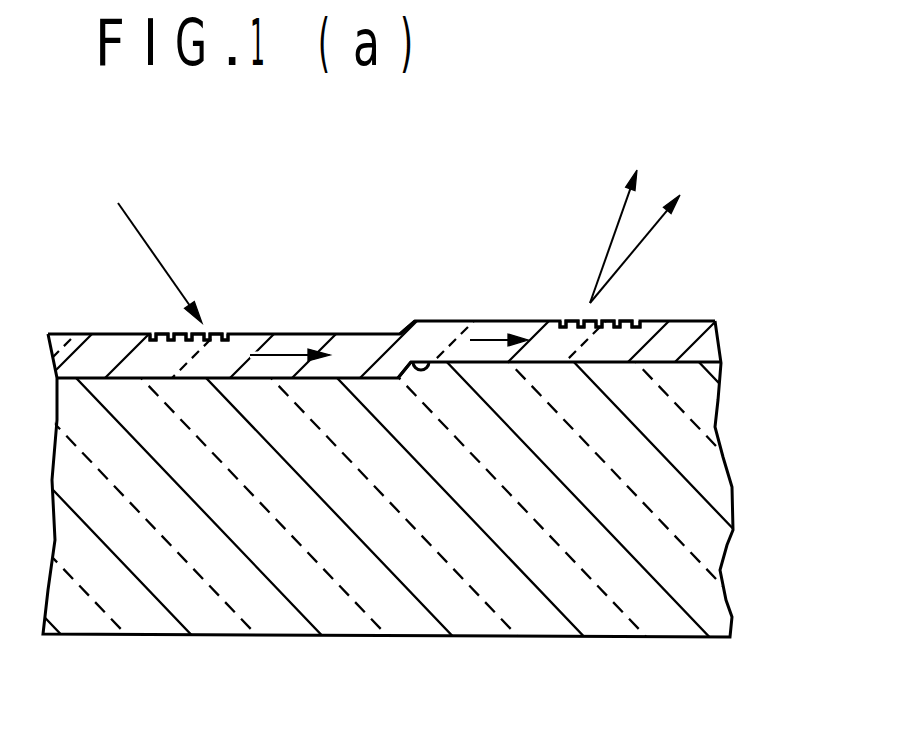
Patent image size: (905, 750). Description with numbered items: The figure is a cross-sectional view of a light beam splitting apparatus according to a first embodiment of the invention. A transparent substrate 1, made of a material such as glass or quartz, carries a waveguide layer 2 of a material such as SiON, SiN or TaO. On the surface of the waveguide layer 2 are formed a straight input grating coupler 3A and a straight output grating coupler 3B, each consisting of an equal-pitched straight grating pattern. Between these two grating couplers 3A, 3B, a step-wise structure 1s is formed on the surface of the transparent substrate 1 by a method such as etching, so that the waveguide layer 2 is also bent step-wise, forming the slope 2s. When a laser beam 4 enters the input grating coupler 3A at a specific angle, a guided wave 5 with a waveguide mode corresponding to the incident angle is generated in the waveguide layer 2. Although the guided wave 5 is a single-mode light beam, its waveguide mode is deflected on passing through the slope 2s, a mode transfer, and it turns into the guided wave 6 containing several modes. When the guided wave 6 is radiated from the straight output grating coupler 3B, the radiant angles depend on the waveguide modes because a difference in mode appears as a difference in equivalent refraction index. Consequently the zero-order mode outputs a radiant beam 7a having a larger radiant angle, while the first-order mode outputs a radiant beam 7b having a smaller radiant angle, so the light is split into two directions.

The transparent substrate 1 is at (695, 517).
The step-wise structure 1s is at (428, 365).
The waveguide layer 2 is at (707, 350).
The slope 2s is at (400, 327).
The straight input grating coupler 3A is at (220, 323).
The straight output grating coupler 3B is at (628, 312).
The laser beam 4 is at (160, 251).
The guided wave 5 is at (292, 335).
The guided wave 6 is at (505, 323).
The radiant beam 7a is at (661, 227).
The radiant beam 7b is at (625, 210).